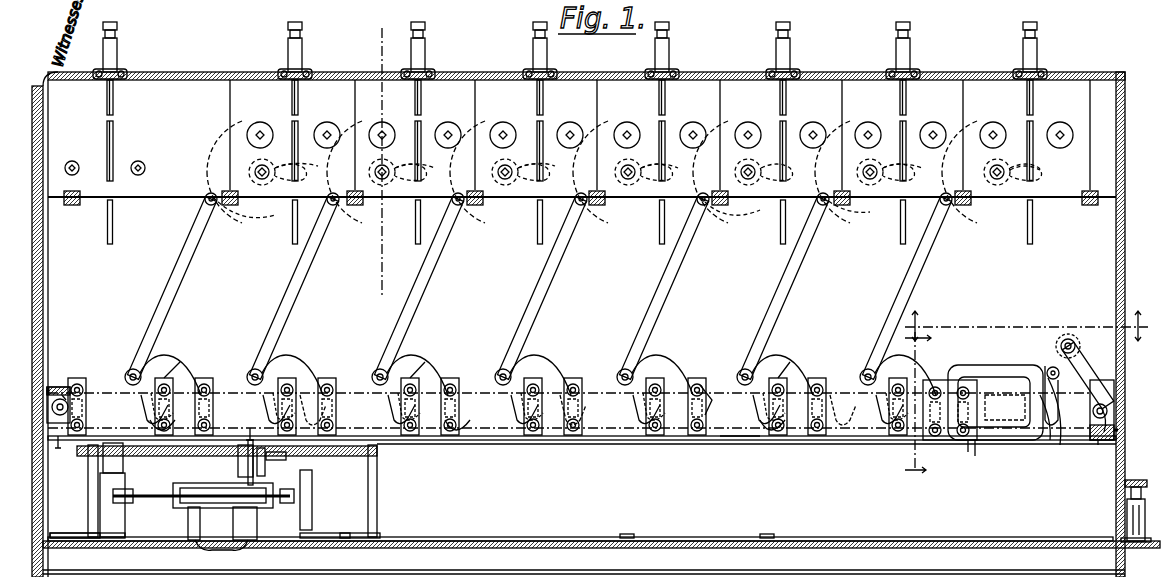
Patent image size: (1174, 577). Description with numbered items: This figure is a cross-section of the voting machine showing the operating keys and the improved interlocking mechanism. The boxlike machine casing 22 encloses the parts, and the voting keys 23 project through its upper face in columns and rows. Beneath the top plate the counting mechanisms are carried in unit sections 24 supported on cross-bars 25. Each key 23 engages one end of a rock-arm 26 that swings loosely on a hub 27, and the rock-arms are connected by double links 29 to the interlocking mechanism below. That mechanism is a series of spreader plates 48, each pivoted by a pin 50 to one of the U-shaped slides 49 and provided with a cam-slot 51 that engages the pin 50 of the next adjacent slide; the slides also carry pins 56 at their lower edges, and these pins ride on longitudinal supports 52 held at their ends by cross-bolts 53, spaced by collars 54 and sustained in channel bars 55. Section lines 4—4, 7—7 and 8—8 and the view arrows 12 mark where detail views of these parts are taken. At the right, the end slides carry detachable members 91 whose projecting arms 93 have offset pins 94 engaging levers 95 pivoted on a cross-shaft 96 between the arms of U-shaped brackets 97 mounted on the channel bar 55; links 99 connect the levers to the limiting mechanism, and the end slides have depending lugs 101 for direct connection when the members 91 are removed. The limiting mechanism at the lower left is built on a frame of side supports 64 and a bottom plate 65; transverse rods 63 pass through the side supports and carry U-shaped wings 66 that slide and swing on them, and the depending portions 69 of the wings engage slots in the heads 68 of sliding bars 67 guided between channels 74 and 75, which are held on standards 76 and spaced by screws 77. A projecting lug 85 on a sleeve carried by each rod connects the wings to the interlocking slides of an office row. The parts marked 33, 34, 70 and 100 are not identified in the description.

The section line 4 is at (368, 42).
The section line 7 is at (1029, 325).
The section line 8 is at (918, 408).
The view arrows 12 is at (58, 442).
The machine casing 22 is at (1114, 268).
The voting keys 23 is at (302, 54).
The unit sections 24 is at (330, 213).
The cross-bars 25 is at (231, 207).
The rock-arm 26 is at (303, 165).
The hub 27 is at (424, 170).
The links 29 is at (420, 276).
The crank shaft pivot 33 is at (266, 182).
The guide rod 34 is at (572, 173).
The spreader plates 48 is at (170, 353).
The slides 49 is at (330, 380).
The pin 50 is at (310, 390).
The cam-slot 51 is at (172, 381).
The longitudinal supports 52 is at (704, 388).
The cross-bolts 53 is at (62, 396).
The collars 54 is at (48, 408).
The channel bars 55 is at (50, 388).
The pins 56 is at (168, 418).
The transverse rods 63 is at (770, 510).
The side supports 64 is at (88, 491).
The bottom plate 65 is at (378, 521).
The U-shaped wings 66 is at (120, 450).
The sliding bars 67 is at (168, 496).
The head pieces 68 is at (113, 498).
The depending portions 69 is at (120, 516).
The foot 70 is at (116, 534).
The channel 74 is at (178, 488).
The channel 75 is at (194, 510).
The standards 76 is at (221, 551).
The screws 77 is at (248, 455).
The projecting lug 85 is at (270, 454).
The detachable members 91 is at (976, 366).
The projecting arms 93 is at (1030, 396).
The offset pins 94 is at (1051, 366).
The levers 95 is at (1060, 444).
The cross-shaft 96 is at (1070, 338).
The U-shaped brackets 97 is at (1110, 378).
The links 99 is at (748, 440).
The pin 100 is at (250, 430).
The depending lugs 101 is at (970, 452).